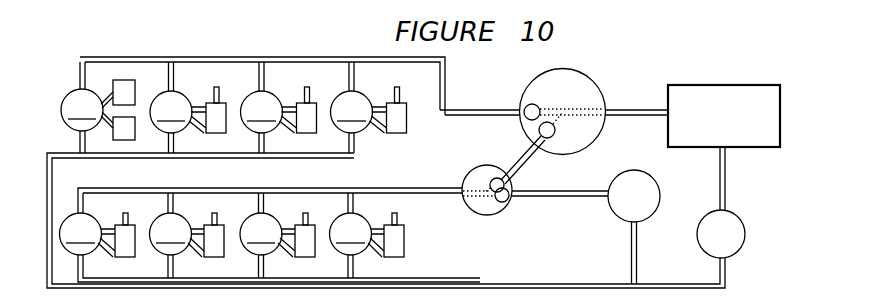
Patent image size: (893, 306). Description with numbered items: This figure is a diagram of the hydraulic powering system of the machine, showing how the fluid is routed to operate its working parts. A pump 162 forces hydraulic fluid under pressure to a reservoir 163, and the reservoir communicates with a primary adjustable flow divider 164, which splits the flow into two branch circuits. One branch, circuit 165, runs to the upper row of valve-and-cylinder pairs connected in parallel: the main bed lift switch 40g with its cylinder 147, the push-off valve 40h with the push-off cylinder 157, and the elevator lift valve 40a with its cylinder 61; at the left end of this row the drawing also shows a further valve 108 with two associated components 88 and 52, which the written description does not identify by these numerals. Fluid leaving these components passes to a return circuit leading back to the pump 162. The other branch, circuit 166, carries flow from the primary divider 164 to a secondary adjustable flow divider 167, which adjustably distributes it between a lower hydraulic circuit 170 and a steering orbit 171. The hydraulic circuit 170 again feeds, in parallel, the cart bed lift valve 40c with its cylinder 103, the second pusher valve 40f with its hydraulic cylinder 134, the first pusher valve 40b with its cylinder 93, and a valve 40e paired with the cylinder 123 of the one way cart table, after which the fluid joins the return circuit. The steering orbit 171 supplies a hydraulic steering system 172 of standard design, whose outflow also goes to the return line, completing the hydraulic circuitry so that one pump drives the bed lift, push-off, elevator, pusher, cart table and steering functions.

The control valve 108 is at (87, 110).
The actuator 88 is at (125, 90).
The actuator 52 is at (123, 128).
The elevator lift valve 40a is at (171, 112).
The cylinder 61 is at (220, 117).
The push-off valve 40h is at (262, 112).
The push-off cylinder 157 is at (310, 115).
The main bed lift switch 40g is at (352, 112).
The cylinder 147 is at (398, 115).
The circuit 165 is at (477, 109).
The primary adjustable flow divider 164 is at (575, 97).
The reservoir 163 is at (688, 100).
The hydraulic circuit 170 is at (414, 188).
The secondary adjustable flow divider 167 is at (483, 178).
The circuit 166 is at (519, 159).
The steering orbit 171 is at (587, 197).
The hydraulic steering system 172 is at (632, 186).
The pump 162 is at (705, 238).
The hydraulic cylinder 40e is at (81, 234).
The cylinder 123 is at (123, 238).
The first pusher valve 40b is at (171, 234).
The cylinder 93 is at (217, 237).
The second pusher valve 40f is at (261, 234).
The hydraulic cylinder 134 is at (307, 237).
The cart bed lift valve 40c is at (351, 234).
The cylinder 103 is at (397, 240).